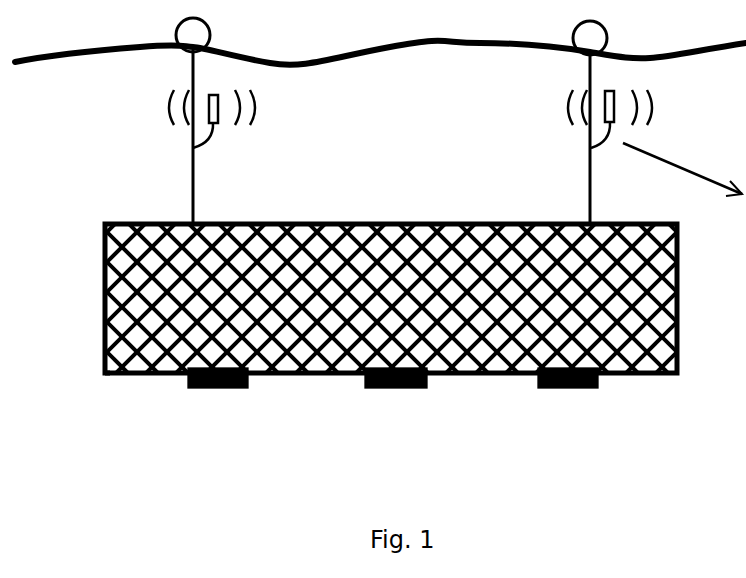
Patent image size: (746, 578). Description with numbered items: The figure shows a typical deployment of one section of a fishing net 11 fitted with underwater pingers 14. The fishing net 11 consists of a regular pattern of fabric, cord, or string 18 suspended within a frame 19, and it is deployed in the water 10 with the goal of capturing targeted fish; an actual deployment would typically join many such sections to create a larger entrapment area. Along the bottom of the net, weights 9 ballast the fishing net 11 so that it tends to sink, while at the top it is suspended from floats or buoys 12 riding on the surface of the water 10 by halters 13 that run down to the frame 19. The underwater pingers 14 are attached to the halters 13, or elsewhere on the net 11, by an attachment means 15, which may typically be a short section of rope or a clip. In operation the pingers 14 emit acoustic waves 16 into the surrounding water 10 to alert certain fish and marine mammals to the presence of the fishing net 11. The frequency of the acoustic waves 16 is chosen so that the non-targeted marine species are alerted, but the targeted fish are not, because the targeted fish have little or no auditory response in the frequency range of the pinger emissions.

The weights 9 is at (540, 393).
The water 10 is at (380, 93).
The fishing net 11 is at (90, 283).
The floats or buoys 12 is at (567, 33).
The halters 13 is at (585, 200).
The underwater pinger 14 is at (605, 108).
The attachment means 15 is at (583, 142).
The acoustic waves 16 is at (163, 108).
The fabric, cord, or string 18 is at (373, 298).
The frame 19 is at (107, 378).